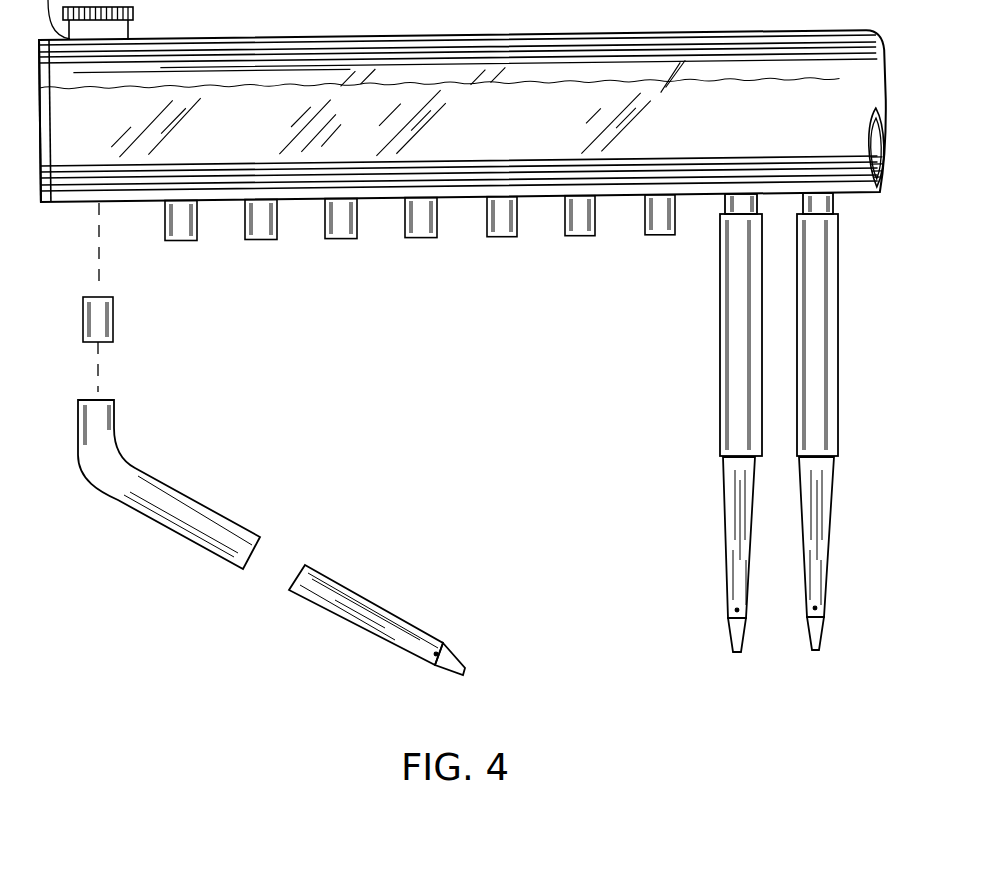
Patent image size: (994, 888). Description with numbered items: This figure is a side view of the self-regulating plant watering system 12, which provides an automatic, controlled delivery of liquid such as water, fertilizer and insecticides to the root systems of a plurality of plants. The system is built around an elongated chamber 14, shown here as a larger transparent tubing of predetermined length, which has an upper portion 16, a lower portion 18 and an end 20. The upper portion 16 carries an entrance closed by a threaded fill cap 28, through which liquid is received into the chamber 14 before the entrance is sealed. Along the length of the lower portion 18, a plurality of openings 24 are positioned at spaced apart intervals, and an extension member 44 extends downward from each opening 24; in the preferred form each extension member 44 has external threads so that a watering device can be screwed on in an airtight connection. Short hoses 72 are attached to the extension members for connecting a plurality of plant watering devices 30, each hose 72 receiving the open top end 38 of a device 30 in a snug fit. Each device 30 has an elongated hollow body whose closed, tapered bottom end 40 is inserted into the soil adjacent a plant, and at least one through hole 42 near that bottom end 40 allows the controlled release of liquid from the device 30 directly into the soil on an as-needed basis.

The plant watering system 12 is at (633, 15).
The elongated chamber 14 is at (377, 33).
The upper portion 16 is at (198, 38).
The lower portion 18 is at (307, 201).
The end 20 is at (38, 142).
The openings 24 is at (165, 203).
The threaded fill cap 28 is at (134, 13).
The plant watering device 30 is at (382, 598).
The open top end 38 is at (305, 565).
The closed, tapered bottom end 40 is at (463, 668).
The through hole 42 is at (437, 652).
The extension member 44 is at (166, 236).
The short plastic hose 72 is at (165, 480).